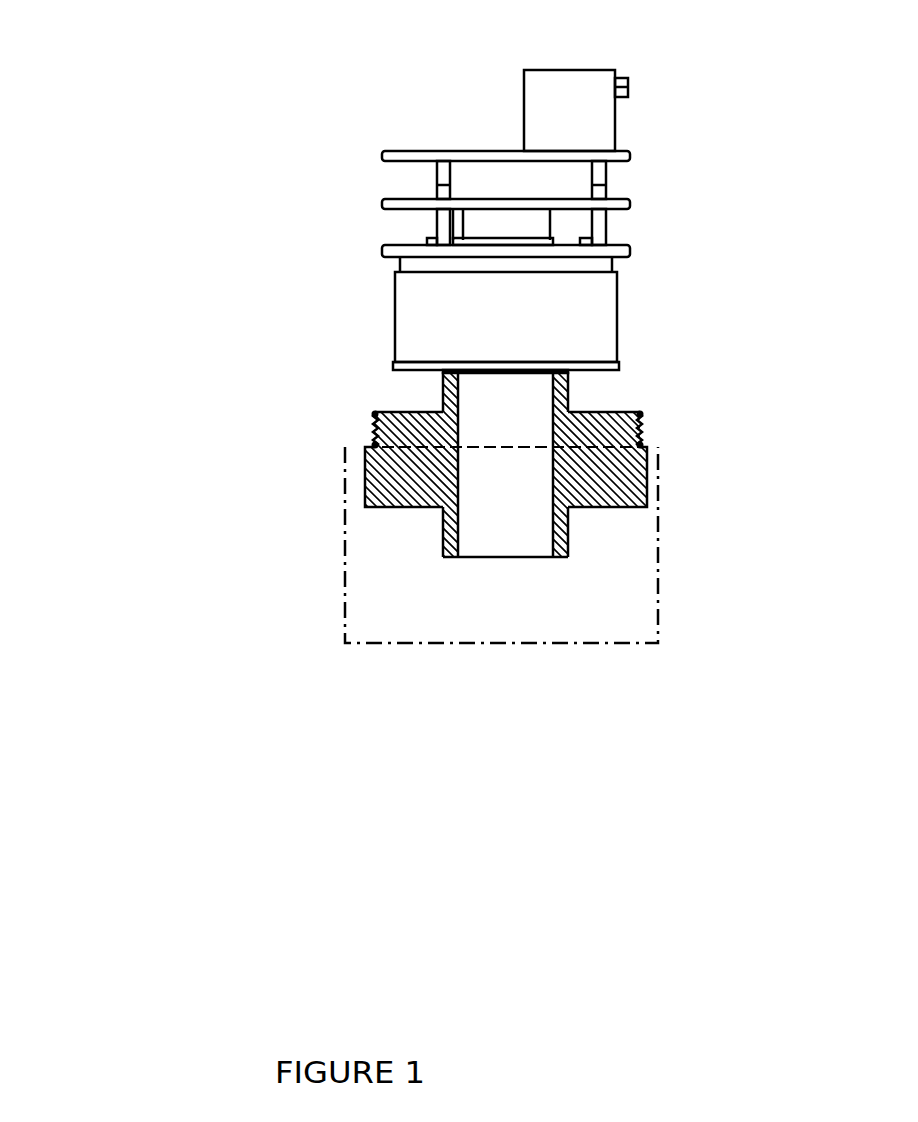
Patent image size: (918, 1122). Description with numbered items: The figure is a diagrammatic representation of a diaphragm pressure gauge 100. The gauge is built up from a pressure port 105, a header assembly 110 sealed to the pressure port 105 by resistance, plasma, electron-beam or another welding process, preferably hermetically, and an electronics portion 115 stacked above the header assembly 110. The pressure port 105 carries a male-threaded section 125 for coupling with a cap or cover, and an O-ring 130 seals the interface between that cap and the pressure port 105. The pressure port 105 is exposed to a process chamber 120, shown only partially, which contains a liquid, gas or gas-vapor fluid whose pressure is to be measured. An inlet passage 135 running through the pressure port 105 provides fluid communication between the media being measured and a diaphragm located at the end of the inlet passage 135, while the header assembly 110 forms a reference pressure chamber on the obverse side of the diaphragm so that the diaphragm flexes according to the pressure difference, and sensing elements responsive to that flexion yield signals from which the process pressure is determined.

The diaphragm pressure gauge 100 is at (169, 112).
The pressure port 105 is at (346, 475).
The header assembly 110 is at (362, 321).
The electronics portion 115 is at (643, 67).
The process chamber 120 is at (324, 595).
The male-threaded section 125 is at (641, 414).
The O-ring 130 is at (352, 430).
The inlet passage 135 is at (487, 523).